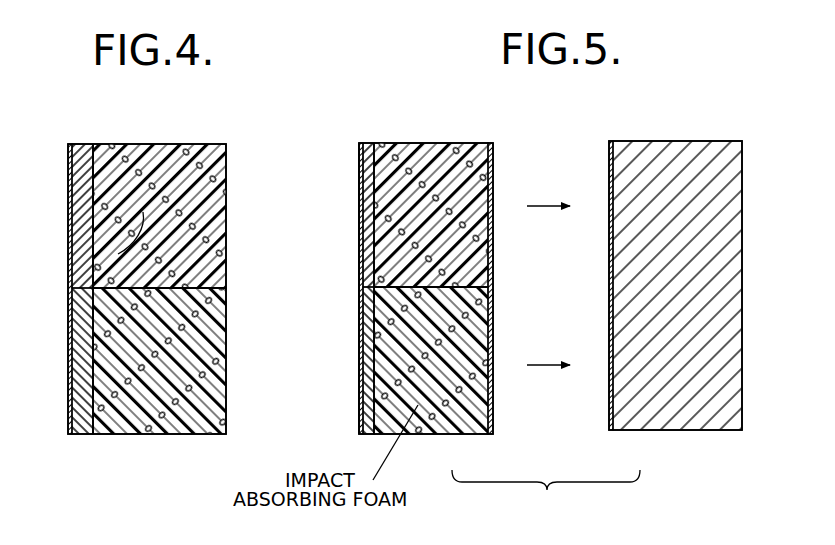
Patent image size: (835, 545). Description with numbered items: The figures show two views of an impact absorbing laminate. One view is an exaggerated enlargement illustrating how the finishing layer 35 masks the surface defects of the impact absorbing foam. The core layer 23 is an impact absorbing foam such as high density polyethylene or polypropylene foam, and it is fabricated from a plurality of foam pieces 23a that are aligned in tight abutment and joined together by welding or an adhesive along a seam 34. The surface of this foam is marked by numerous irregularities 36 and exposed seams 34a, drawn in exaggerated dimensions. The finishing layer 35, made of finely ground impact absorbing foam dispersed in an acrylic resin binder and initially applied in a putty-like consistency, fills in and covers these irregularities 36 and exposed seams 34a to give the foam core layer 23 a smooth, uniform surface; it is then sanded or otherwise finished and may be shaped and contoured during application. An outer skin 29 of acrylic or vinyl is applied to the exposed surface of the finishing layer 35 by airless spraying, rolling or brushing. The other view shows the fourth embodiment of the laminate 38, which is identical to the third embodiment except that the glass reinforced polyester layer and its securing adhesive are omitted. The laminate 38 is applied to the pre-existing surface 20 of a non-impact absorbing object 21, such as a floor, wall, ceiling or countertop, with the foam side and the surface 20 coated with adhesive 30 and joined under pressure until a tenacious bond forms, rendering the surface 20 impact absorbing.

In FIG. 5, the pre-existing surface 20 is at (614, 405).
In FIG. 5, the non-impact absorbing object 21 is at (730, 303).
In FIG. 4, the core layer 23 is at (150, 440).
In FIG. 5, the core layer 23 is at (440, 141).
In FIG. 4, the foam pieces 23a is at (156, 144).
In FIG. 5, the foam pieces 23a is at (483, 242).
In FIG. 4, the outer skin 29 is at (72, 178).
In FIG. 5, the outer skin 29 is at (358, 201).
In FIG. 5, the adhesive 30 is at (490, 324).
In FIG. 4, the seam 34 is at (226, 275).
In FIG. 5, the seam 34 is at (434, 283).
In FIG. 4, the exposed seams 34a is at (141, 245).
In FIG. 4, the finishing layer 35 is at (86, 432).
In FIG. 5, the finishing layer 35 is at (362, 424).
In FIG. 4, the irregularities 36 is at (93, 170).
In FIG. 5, the laminate 38 is at (356, 281).